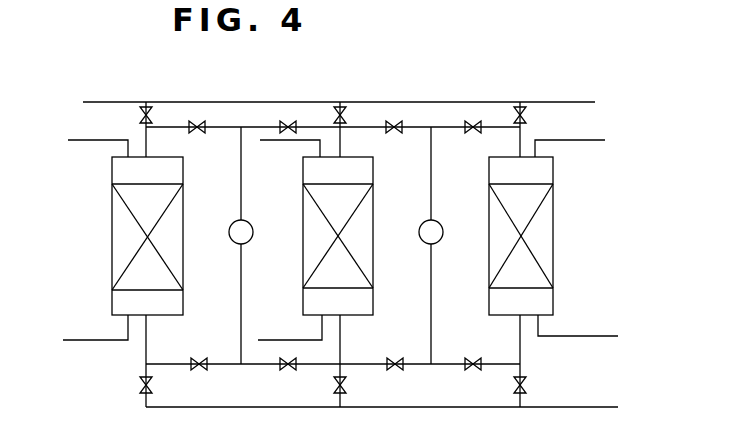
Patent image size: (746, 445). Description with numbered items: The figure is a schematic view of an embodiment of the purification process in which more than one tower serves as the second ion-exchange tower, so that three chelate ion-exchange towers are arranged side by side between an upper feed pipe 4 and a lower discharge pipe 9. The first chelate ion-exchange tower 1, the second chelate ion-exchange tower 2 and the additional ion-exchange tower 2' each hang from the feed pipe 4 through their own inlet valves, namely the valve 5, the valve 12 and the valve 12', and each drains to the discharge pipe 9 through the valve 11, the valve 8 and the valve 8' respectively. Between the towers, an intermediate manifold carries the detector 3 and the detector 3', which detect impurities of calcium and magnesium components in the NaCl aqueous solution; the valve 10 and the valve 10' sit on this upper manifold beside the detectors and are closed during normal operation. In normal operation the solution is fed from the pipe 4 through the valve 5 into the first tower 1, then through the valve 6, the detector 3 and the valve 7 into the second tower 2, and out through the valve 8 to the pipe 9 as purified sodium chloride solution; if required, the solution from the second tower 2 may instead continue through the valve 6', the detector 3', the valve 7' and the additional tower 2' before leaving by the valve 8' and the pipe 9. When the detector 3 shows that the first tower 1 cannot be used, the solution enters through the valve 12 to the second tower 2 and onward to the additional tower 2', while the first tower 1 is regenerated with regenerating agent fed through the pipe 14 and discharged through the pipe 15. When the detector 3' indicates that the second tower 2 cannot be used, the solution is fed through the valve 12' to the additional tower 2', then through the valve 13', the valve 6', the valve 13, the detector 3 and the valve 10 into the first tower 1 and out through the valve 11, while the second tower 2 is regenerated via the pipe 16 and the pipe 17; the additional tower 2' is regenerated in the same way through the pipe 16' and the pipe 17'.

The first chelate ion-exchange tower 1 is at (112, 233).
The second chelate ion-exchange tower 2 is at (317, 236).
The additional ion-exchange tower 2' is at (545, 236).
The detector 3 is at (251, 220).
The detector 3' is at (445, 220).
The pipe 4 is at (322, 102).
The valve 5 is at (132, 120).
The valve 6 is at (199, 380).
The valve 6' is at (401, 380).
The valve 7 is at (283, 97).
The valve 7' is at (469, 97).
The valve 8 is at (349, 386).
The valve 8' is at (533, 386).
The pipe 9 is at (393, 407).
The valve 10 is at (189, 98).
The valve 10' is at (400, 97).
The valve 11 is at (140, 385).
The valve 12 is at (354, 92).
The valve 12' is at (535, 92).
The valve 13 is at (286, 380).
The valve 13' is at (470, 380).
The pipe 14 is at (78, 147).
The pipe 15 is at (78, 335).
The pipe 16 is at (281, 153).
The pipe 16' is at (592, 142).
The pipe 17 is at (285, 324).
The pipe 17' is at (598, 333).